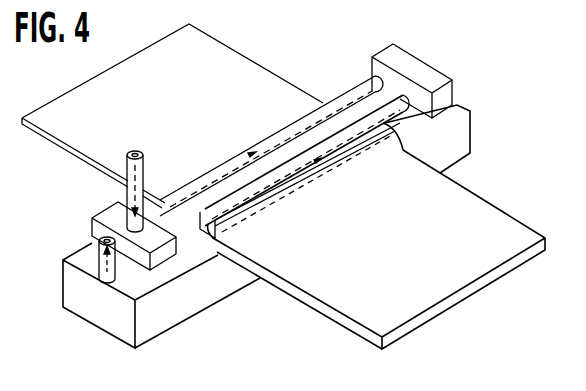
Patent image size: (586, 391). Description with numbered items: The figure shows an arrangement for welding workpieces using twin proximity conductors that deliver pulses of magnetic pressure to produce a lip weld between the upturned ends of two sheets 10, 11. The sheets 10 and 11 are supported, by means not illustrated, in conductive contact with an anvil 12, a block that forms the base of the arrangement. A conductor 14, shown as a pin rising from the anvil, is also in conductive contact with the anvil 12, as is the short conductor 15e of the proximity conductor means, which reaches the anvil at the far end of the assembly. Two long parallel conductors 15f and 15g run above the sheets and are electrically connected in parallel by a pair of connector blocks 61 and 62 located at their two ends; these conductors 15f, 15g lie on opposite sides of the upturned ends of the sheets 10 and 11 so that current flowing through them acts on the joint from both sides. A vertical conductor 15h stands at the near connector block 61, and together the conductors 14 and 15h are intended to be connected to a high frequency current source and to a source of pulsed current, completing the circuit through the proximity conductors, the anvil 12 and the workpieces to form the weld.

The sheet 10 is at (495, 215).
The sheet 11 is at (246, 56).
The anvil 12 is at (170, 320).
The conductor 14 is at (97, 250).
The short conductor 15e is at (400, 90).
The conductor 15f is at (270, 138).
The conductor 15g is at (325, 160).
The conductor 15h is at (143, 168).
The connector block 61 is at (108, 212).
The connector block 62 is at (442, 78).